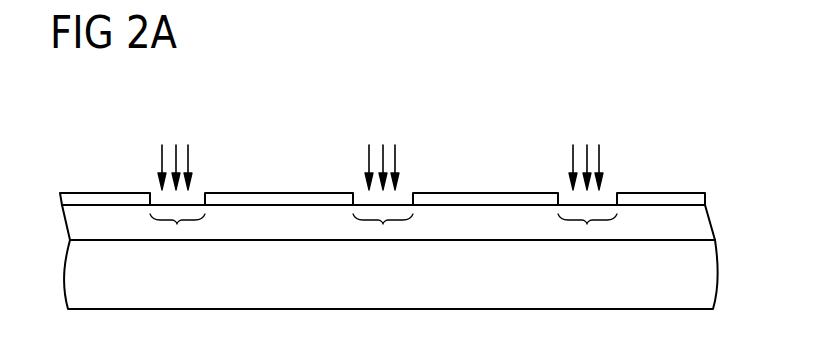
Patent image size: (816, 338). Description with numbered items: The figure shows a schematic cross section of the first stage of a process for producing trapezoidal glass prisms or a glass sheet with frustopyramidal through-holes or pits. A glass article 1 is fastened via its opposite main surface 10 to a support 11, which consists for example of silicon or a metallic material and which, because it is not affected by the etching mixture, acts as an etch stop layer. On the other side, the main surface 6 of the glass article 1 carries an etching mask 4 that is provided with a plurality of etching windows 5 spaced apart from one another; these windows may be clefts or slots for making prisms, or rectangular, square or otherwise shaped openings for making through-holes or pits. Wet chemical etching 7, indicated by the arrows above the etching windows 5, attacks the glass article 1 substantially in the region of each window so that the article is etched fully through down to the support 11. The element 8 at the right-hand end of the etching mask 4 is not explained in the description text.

The layer 1 is at (690, 224).
The mask layer 4 is at (402, 176).
The openings 5 is at (177, 226).
The thin layer 6 is at (122, 210).
The ion beam / irradiation 7 is at (162, 145).
The mask segment 8 is at (697, 199).
The interface layer 10 is at (90, 240).
The substrate 11 is at (680, 285).